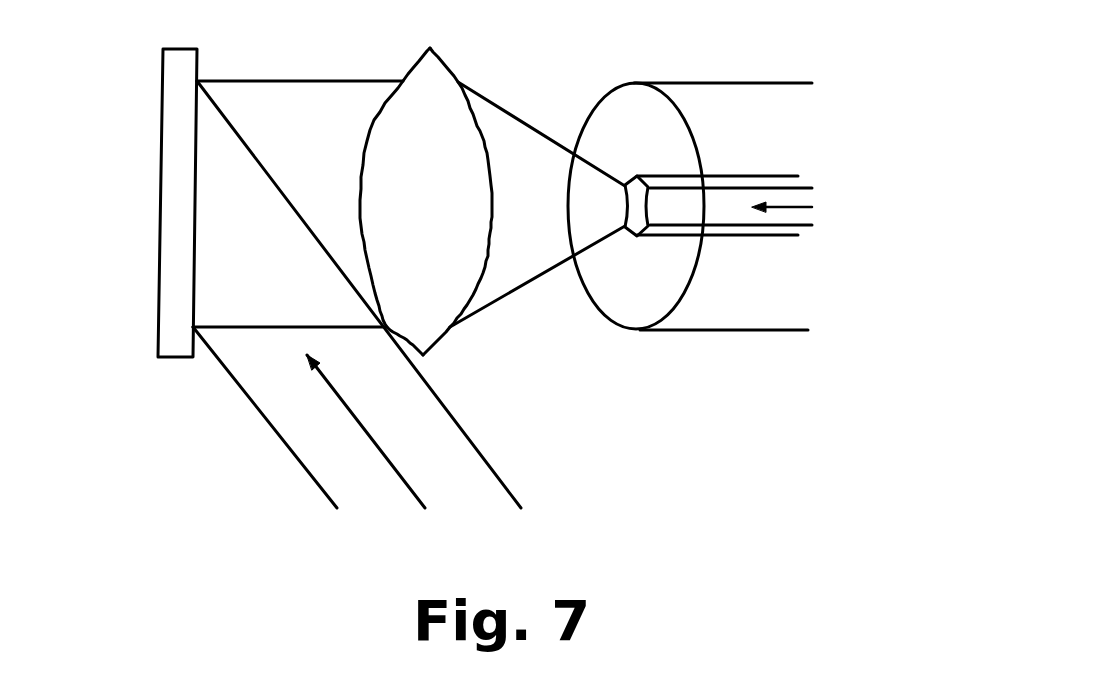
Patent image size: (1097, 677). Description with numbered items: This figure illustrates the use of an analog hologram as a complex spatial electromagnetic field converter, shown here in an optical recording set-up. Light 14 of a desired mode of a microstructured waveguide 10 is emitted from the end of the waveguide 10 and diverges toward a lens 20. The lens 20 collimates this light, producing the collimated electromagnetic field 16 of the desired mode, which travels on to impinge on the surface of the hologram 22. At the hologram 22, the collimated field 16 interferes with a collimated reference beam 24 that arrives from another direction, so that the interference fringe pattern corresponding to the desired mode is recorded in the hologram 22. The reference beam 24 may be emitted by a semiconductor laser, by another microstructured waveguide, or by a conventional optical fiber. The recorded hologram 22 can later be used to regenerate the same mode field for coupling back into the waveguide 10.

The microstructured waveguide 10 is at (735, 313).
The light 14 is at (522, 262).
The collimated electromagnetic field 16 is at (298, 204).
The lens 20 is at (420, 77).
The hologram 22 is at (176, 235).
The collimated reference beam 24 is at (466, 463).